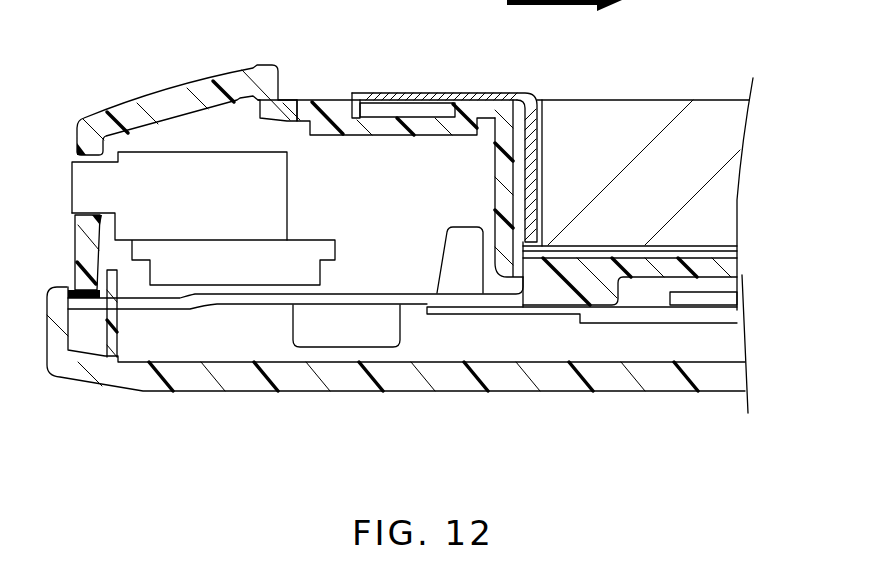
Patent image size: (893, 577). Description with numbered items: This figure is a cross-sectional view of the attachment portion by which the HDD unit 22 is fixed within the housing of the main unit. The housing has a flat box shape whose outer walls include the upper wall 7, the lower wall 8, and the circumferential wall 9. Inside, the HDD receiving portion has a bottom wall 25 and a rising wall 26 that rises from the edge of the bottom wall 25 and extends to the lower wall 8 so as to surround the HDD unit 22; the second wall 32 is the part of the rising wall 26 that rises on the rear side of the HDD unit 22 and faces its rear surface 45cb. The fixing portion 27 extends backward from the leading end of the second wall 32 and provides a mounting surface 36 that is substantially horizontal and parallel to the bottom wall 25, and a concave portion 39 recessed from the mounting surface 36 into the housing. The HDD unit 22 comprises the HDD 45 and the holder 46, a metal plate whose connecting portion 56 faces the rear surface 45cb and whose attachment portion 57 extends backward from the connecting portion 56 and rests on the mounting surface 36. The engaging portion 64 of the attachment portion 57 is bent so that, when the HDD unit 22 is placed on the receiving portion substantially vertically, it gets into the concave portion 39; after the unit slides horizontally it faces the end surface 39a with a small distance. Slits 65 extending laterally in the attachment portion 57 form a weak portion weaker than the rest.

The upper wall 7 is at (413, 378).
The lower wall 8 is at (172, 102).
The circumferential wall 9 is at (82, 244).
The HDD unit 22 is at (727, 88).
The bottom wall 25 is at (698, 278).
The rising wall 26 is at (505, 180).
The fixing portion 27 is at (355, 127).
The second wall 32 is at (502, 215).
The mounting surface 36 is at (297, 100).
The concave portion 39 is at (390, 122).
The end surface 39a is at (453, 107).
The HDD 45 is at (663, 117).
The rear surface 45cb is at (524, 152).
The holder 46 is at (518, 235).
The connecting portion 56 is at (522, 203).
The attachment portion 57 is at (437, 82).
The engaging portion 64 is at (358, 100).
The slits 65 is at (494, 94).